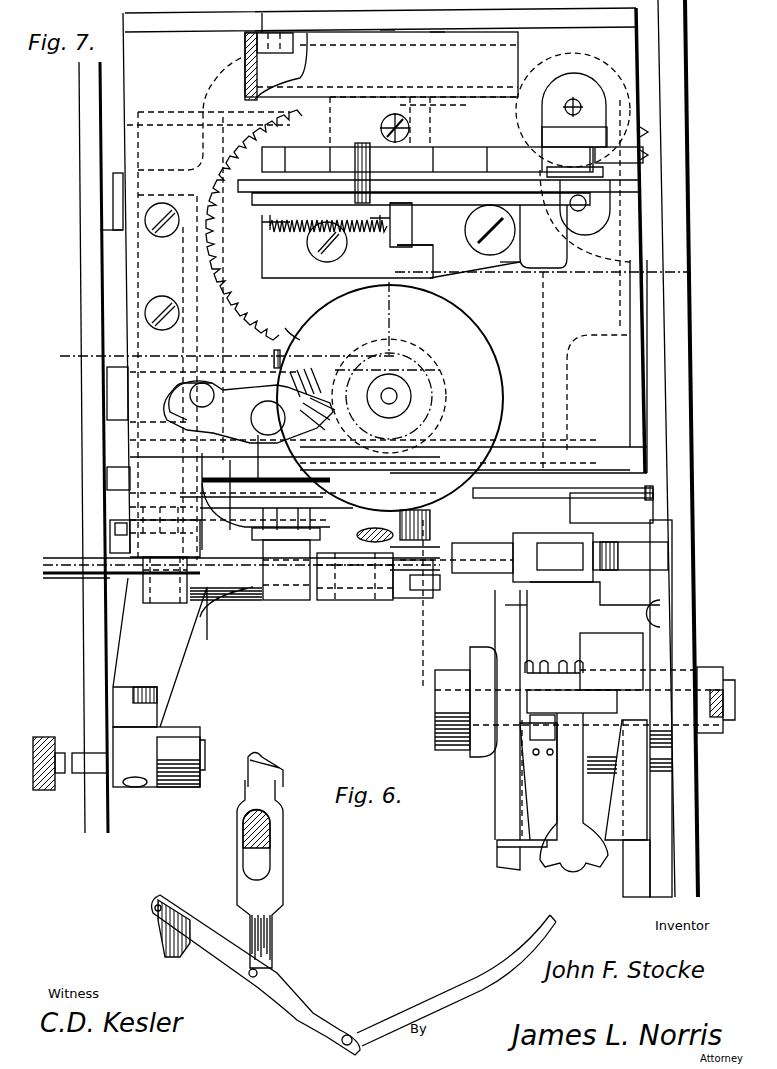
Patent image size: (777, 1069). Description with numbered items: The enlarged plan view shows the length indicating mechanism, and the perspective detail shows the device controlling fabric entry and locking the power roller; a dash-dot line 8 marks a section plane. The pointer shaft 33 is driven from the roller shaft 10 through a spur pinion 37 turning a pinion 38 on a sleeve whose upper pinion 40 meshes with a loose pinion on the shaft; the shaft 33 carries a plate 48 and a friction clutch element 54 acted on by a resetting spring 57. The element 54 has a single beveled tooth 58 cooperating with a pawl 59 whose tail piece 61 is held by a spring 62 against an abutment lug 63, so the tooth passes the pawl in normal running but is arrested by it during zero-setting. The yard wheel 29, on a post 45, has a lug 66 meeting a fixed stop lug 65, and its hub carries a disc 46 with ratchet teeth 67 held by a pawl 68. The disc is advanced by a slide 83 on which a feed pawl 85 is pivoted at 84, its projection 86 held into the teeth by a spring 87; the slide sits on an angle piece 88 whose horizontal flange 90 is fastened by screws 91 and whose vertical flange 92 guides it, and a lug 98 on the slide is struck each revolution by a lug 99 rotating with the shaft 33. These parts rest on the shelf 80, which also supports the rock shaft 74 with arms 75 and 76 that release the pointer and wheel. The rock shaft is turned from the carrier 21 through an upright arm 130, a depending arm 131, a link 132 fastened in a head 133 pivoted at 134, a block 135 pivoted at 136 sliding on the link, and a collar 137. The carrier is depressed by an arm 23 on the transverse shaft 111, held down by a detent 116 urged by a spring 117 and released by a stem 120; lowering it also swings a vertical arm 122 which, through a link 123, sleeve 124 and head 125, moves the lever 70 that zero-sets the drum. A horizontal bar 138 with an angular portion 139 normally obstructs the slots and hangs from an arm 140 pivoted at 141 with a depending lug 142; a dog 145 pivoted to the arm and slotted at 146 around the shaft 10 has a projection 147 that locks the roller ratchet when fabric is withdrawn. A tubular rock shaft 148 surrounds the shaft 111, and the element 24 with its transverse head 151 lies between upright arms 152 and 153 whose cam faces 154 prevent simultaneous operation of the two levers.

In FIG. 7, the section line 8 is at (68, 354).
In FIG. 7, the shaft 10 is at (422, 520).
In FIG. 6, the shaft 10 is at (267, 833).
In FIG. 7, the carrier 21 is at (570, 480).
In FIG. 7, the arm 23 is at (512, 605).
In FIG. 7, the element 24 is at (574, 792).
In FIG. 7, the yard wheel 29 is at (518, 38).
In FIG. 7, the vertical shaft 33 is at (407, 387).
In FIG. 7, the spur pinion 37 is at (437, 33).
In FIG. 7, the pinion 38 is at (254, 225).
In FIG. 7, the pinion 40 is at (320, 295).
In FIG. 7, the post 45 is at (397, 27).
In FIG. 7, the disc 46 is at (300, 150).
In FIG. 7, the plate 48 is at (473, 330).
In FIG. 7, the friction clutch element 54 is at (443, 398).
In FIG. 7, the coil resetting spring 57 is at (306, 394).
In FIG. 7, the tooth 58 is at (282, 360).
In FIG. 7, the pawl 59 is at (307, 420).
In FIG. 7, the tail piece 61 is at (242, 439).
In FIG. 7, the spring 62 is at (207, 387).
In FIG. 7, the abutment lug 63 is at (213, 386).
In FIG. 7, the fixed stop lug 65 is at (290, 32).
In FIG. 7, the lug 66 is at (258, 32).
In FIG. 7, the ratchet teeth 67 is at (285, 158).
In FIG. 7, the pawl 68 is at (570, 147).
In FIG. 7, the lever 70 is at (48, 737).
In FIG. 7, the horizontal rock shaft 74 is at (135, 292).
In FIG. 7, the horizontal arm 75 is at (430, 423).
In FIG. 7, the horizontal arm 76 is at (547, 83).
In FIG. 7, the shelf 80 is at (266, 489).
In FIG. 7, the slide 83 is at (462, 195).
In FIG. 7, the pivot 84 is at (278, 223).
In FIG. 7, the feed pawl 85 is at (313, 223).
In FIG. 7, the lateral projection 86 is at (357, 160).
In FIG. 7, the spring 87 is at (370, 223).
In FIG. 7, the angle piece 88 is at (563, 252).
In FIG. 7, the horizontal flange 90 is at (528, 270).
In FIG. 7, the screws 91 is at (500, 243).
In FIG. 7, the vertical flange 92 is at (560, 240).
In FIG. 7, the lug 98 is at (407, 210).
In FIG. 7, the lug 99 is at (423, 258).
In FIG. 7, the transverse shaft 111 is at (712, 690).
In FIG. 7, the detent 116 is at (602, 592).
In FIG. 7, the spring 117 is at (640, 550).
In FIG. 7, the stem 120 is at (65, 575).
In FIG. 7, the vertical arm 122 is at (177, 677).
In FIG. 7, the link 123 is at (75, 783).
In FIG. 7, the sleeve 124 is at (132, 795).
In FIG. 7, the head 125 is at (193, 792).
In FIG. 7, the fixed upright arm 130 is at (263, 540).
In FIG. 7, the depending arm 131 is at (143, 538).
In FIG. 7, the link 132 is at (252, 583).
In FIG. 7, the head 133 is at (167, 600).
In FIG. 7, the horizontal axis 134 is at (177, 545).
In FIG. 7, the block 135 is at (305, 603).
In FIG. 7, the horizontal axis 136 is at (308, 523).
In FIG. 7, the collar 137 is at (348, 605).
In FIG. 7, the horizontal bar 138 is at (640, 457).
In FIG. 6, the horizontal bar 138 is at (480, 980).
In FIG. 6, the angular portion 139 is at (547, 937).
In FIG. 7, the arm 140 is at (602, 493).
In FIG. 6, the arm 140 is at (283, 980).
In FIG. 7, the pivot 141 is at (108, 503).
In FIG. 6, the depending lug 142 is at (180, 955).
In FIG. 6, the dog 145 is at (260, 917).
In FIG. 6, the guide slot 146 is at (267, 863).
In FIG. 7, the projection 147 is at (282, 775).
In FIG. 7, the tubular rock shaft 148 is at (707, 733).
In FIG. 7, the transverse head 151 is at (553, 693).
In FIG. 7, the upright arm 152 is at (503, 777).
In FIG. 7, the upright arm 153 is at (640, 810).
In FIG. 7, the cam faces 154 is at (615, 790).